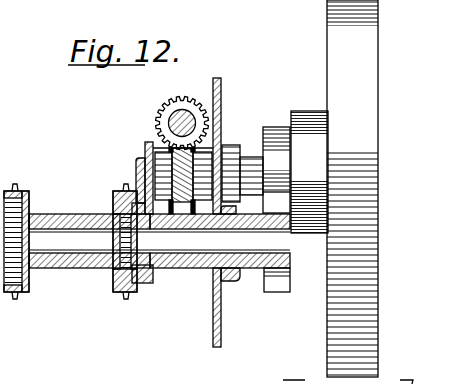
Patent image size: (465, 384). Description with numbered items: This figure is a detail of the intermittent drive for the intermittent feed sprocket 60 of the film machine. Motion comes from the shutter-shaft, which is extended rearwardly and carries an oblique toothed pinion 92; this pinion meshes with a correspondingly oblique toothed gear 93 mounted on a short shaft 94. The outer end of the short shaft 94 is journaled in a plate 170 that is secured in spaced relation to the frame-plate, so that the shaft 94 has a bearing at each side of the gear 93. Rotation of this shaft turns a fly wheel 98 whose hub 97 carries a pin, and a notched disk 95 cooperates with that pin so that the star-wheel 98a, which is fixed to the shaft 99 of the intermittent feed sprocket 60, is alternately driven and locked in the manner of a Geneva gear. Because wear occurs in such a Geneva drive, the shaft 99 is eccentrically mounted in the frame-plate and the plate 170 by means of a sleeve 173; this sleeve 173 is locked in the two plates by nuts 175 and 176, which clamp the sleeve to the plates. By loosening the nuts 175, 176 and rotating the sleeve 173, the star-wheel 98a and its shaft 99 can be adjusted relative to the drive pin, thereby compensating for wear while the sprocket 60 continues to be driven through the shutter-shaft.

The intermittent feed sprocket 60 is at (113, 191).
The oblique toothed pinion 92 is at (178, 100).
The oblique toothed gear 93 is at (197, 150).
The short shaft 94 is at (140, 177).
The notched disk 95 is at (275, 130).
The hub 97 is at (309, 172).
The fly wheel 98 is at (352, 188).
The star-wheel 98a is at (283, 282).
The shaft 99 is at (87, 262).
The plate 170 is at (149, 142).
The sleeve 173 is at (180, 266).
The nut 175 is at (143, 287).
The nut 176 is at (231, 281).